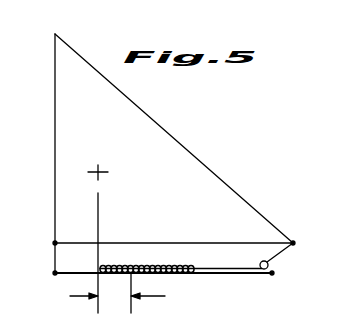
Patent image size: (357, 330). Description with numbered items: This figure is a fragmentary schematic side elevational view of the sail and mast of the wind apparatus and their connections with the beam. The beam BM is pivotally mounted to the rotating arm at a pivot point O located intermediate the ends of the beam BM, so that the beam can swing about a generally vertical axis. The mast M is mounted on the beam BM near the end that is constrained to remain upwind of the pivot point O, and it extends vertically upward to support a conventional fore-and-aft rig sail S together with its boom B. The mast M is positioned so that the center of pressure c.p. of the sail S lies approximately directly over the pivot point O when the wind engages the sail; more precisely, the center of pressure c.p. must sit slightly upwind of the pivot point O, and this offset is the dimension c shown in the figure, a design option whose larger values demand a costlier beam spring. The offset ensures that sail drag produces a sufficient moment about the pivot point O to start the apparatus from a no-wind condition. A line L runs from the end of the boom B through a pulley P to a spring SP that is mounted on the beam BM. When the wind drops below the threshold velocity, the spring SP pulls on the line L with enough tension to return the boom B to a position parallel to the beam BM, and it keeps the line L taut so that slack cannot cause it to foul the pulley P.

The mast M is at (55, 152).
The sail S is at (183, 143).
The boom B is at (211, 243).
The line L is at (282, 253).
The pulley P is at (266, 271).
The beam BM is at (240, 276).
The spring SP is at (182, 276).
The center of pressure c.p. is at (108, 170).
The dimension c is at (117, 293).
The pivot point O is at (133, 275).